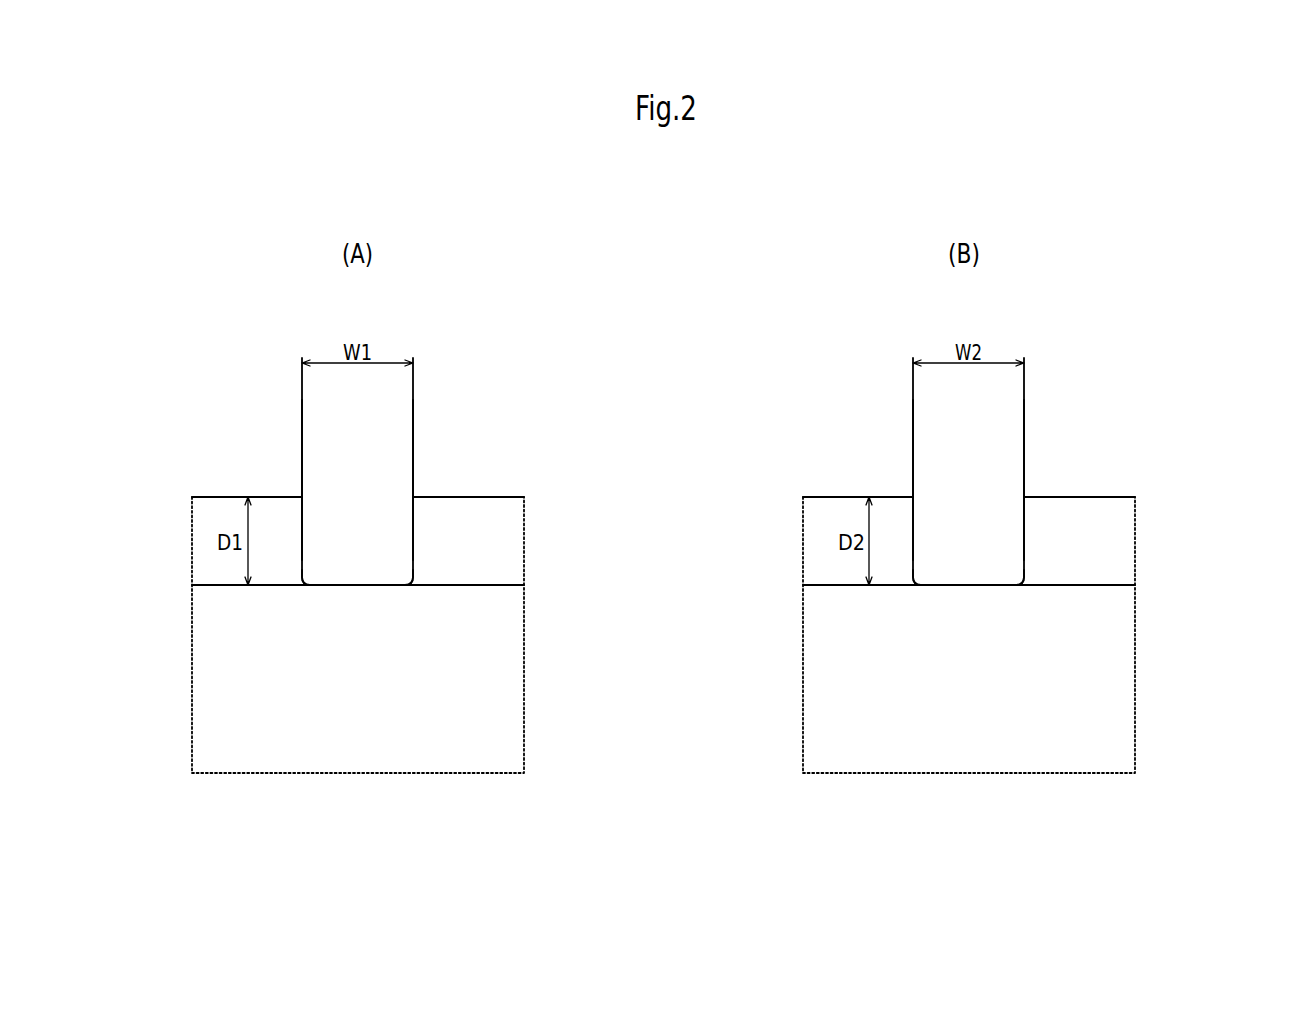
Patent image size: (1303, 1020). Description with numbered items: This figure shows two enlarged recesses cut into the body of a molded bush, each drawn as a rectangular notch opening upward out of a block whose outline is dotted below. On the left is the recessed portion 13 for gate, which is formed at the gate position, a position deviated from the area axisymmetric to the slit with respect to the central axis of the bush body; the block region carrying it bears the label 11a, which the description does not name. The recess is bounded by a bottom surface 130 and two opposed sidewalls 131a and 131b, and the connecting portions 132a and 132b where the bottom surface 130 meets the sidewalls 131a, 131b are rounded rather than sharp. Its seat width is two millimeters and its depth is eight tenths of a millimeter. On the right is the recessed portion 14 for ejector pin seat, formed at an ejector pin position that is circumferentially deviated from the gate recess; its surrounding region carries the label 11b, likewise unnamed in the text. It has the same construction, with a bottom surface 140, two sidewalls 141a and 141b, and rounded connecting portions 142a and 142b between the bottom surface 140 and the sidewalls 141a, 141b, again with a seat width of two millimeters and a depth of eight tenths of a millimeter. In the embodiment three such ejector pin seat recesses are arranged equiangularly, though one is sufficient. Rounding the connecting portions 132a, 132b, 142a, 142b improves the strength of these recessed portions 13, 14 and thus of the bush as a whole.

The first substrate 11a is at (233, 497).
The recessed portion for gate 13 is at (344, 495).
The bottom surface 130 is at (358, 585).
The sidewall 131a is at (305, 535).
The sidewall 131b is at (413, 533).
The connecting portion 132a is at (307, 575).
The connecting portion 132b is at (403, 577).
The second substrate 11b is at (842, 497).
The recessed portion for ejector pin seat 14 is at (956, 487).
The bottom surface 140 is at (969, 585).
The sidewall 141a is at (915, 531).
The sidewall 141b is at (1024, 529).
The connecting portion 142a is at (918, 576).
The connecting portion 142b is at (1014, 578).